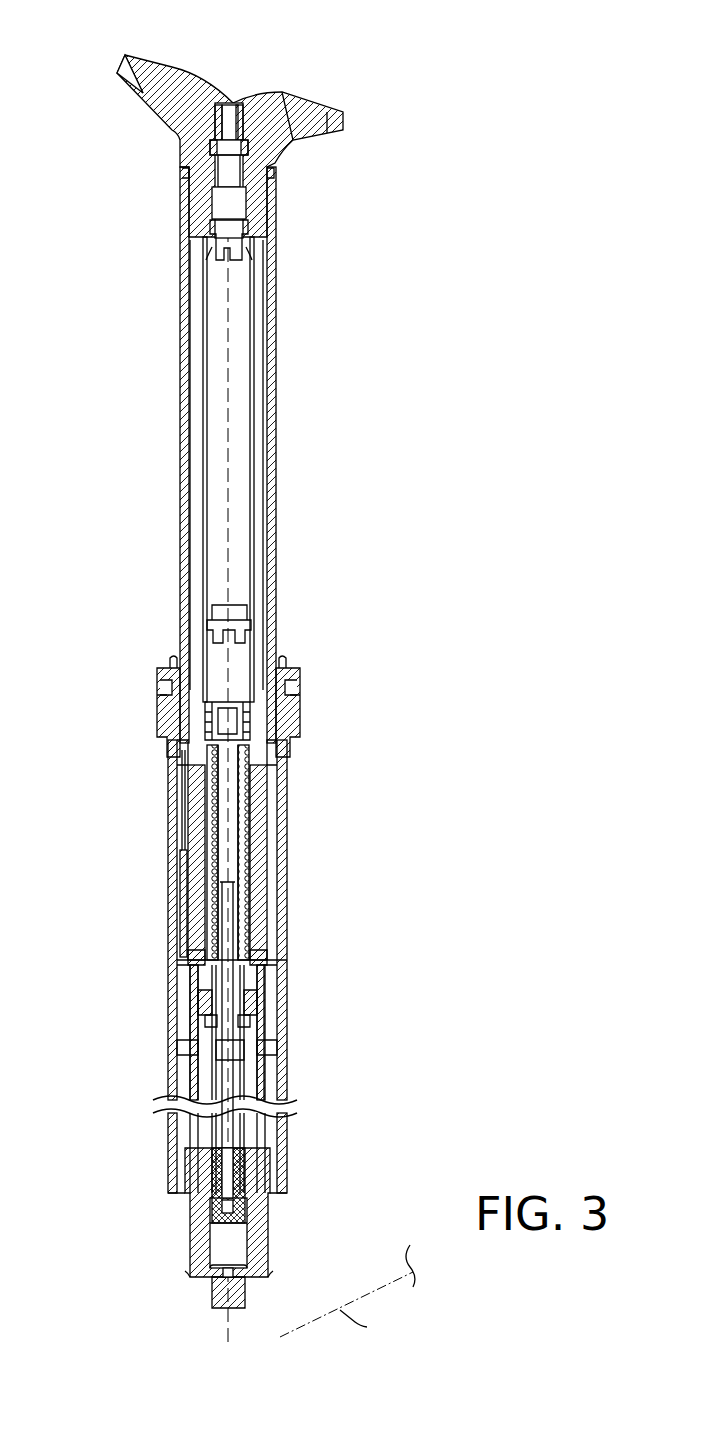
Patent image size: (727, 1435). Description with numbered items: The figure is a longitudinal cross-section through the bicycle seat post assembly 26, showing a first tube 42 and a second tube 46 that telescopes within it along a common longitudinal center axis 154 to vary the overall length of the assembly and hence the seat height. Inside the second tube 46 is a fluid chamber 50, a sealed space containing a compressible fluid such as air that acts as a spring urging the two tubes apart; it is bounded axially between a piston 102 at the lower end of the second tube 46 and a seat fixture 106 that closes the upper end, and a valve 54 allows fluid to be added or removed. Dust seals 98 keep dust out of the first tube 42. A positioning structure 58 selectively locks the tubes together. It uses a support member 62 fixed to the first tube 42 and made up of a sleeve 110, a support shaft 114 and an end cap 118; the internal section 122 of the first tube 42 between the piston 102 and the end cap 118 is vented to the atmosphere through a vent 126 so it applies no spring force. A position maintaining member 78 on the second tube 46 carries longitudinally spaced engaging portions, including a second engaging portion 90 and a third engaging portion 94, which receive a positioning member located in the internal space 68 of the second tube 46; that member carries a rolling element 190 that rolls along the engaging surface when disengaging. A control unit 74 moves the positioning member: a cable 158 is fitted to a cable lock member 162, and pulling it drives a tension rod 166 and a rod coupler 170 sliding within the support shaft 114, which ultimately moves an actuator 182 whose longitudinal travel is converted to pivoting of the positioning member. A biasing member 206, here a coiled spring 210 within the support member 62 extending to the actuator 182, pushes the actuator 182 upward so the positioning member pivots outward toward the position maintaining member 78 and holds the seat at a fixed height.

The bicycle seat post assembly 26 is at (472, 235).
The first tube 42 is at (282, 965).
The second tube 46 is at (276, 355).
The fluid chamber 50 is at (265, 420).
The valve 54 is at (172, 128).
The positioning structure 58 is at (335, 712).
The support member 62 is at (192, 950).
The internal space 68 is at (232, 293).
The control unit 74 is at (335, 812).
The position maintaining member 78 is at (213, 272).
The second engaging portion 90 is at (232, 610).
The third engaging portion 94 is at (231, 234).
The dust seals 98 is at (175, 658).
The piston 102 is at (262, 1005).
The seat fixture 106 is at (343, 120).
The sleeve 110 is at (263, 880).
The support shaft 114 is at (282, 1128).
The end cap 118 is at (210, 1290).
The internal section 122 is at (185, 1075).
The vent 126 is at (190, 1210).
The longitudinal center axis 154 is at (225, 482).
The cable 158 is at (347, 1302).
The cable lock member 162 is at (245, 1230).
The tension rod 166 is at (190, 1150).
The rod coupler 170 is at (240, 1075).
The actuator 182 is at (183, 780).
The rolling element 190 is at (222, 703).
The biasing member 206 is at (250, 920).
The coiled spring 210 is at (222, 880).